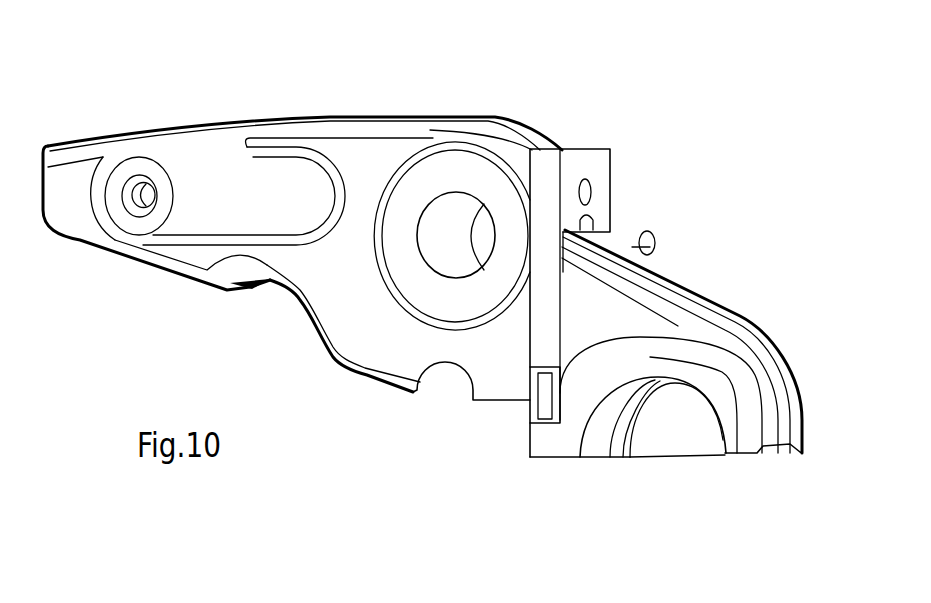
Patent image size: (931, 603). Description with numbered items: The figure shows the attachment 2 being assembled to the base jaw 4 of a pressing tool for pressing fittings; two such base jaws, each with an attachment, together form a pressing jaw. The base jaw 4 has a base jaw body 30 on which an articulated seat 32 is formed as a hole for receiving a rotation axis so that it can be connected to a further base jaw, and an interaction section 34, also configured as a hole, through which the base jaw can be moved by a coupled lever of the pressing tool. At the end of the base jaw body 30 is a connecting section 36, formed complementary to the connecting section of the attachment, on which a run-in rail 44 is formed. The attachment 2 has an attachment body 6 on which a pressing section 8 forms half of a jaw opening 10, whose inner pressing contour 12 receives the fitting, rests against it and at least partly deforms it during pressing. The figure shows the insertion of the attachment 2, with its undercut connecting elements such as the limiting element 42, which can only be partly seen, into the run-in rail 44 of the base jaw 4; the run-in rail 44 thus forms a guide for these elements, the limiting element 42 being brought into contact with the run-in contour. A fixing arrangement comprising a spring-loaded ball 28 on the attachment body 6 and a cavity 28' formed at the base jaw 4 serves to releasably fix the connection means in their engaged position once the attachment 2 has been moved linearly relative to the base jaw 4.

The attachment 2 is at (760, 247).
The base jaw 4 is at (275, 80).
The attachment body 6 is at (628, 305).
The pressing section 8 is at (700, 377).
The jaw opening 10 is at (682, 465).
The pressing contour 12 is at (610, 437).
The spring-loaded ball 28 is at (674, 227).
The cavity 28' is at (631, 174).
The base jaw body 30 is at (364, 165).
The articulated seat 32 is at (452, 227).
The interaction section 34 is at (137, 183).
The connecting section 36 is at (583, 130).
The limiting element 42 is at (547, 403).
The run-in rail 44 is at (600, 207).